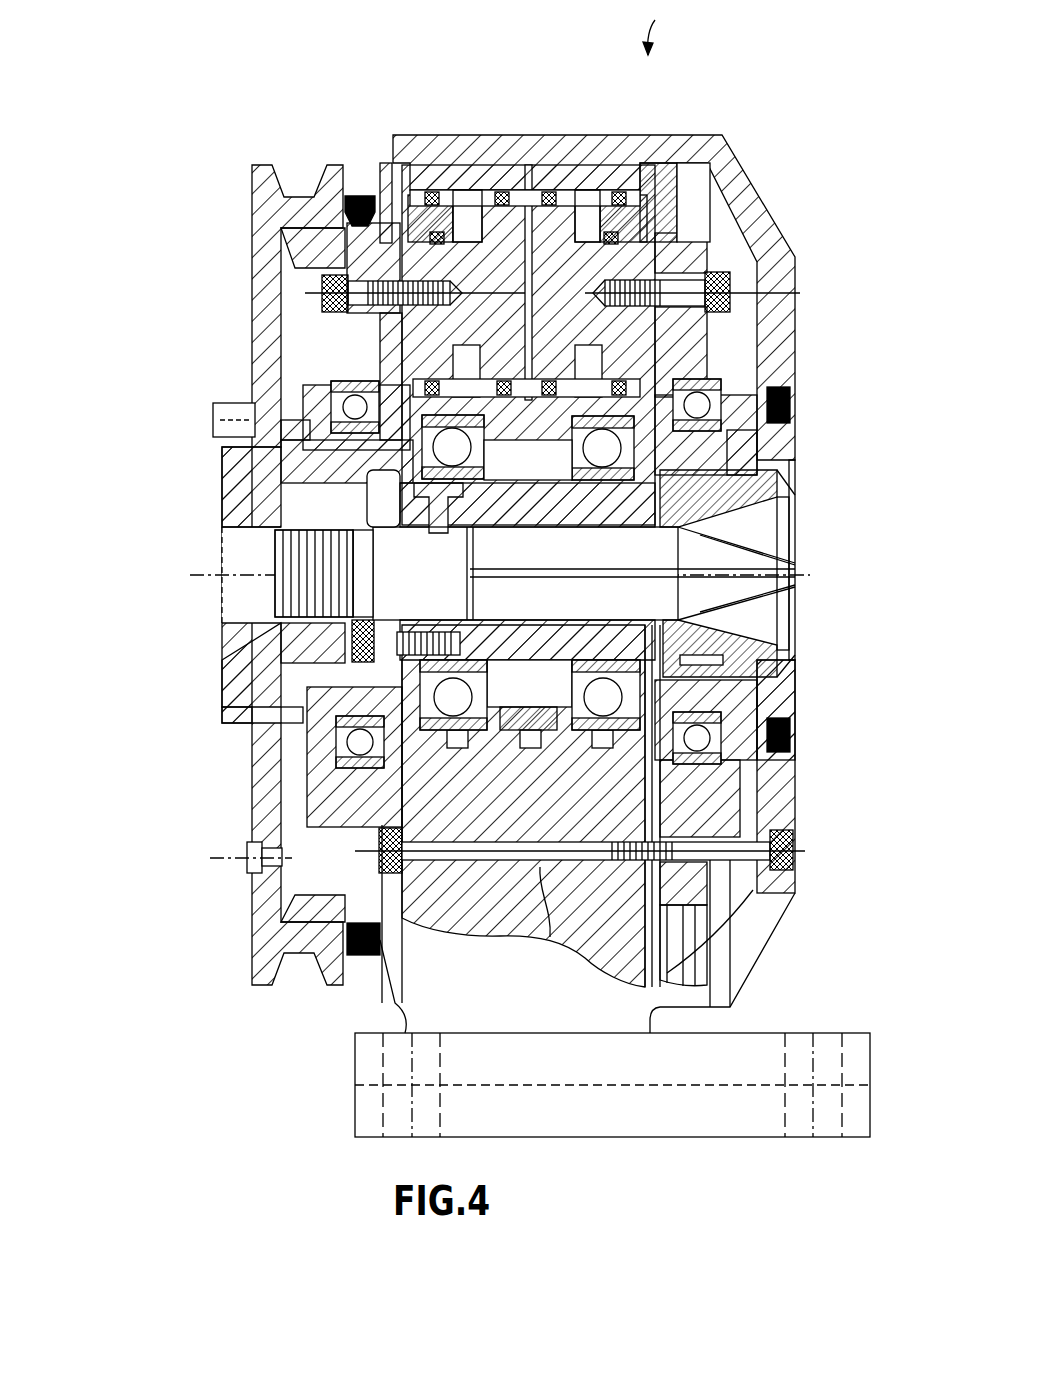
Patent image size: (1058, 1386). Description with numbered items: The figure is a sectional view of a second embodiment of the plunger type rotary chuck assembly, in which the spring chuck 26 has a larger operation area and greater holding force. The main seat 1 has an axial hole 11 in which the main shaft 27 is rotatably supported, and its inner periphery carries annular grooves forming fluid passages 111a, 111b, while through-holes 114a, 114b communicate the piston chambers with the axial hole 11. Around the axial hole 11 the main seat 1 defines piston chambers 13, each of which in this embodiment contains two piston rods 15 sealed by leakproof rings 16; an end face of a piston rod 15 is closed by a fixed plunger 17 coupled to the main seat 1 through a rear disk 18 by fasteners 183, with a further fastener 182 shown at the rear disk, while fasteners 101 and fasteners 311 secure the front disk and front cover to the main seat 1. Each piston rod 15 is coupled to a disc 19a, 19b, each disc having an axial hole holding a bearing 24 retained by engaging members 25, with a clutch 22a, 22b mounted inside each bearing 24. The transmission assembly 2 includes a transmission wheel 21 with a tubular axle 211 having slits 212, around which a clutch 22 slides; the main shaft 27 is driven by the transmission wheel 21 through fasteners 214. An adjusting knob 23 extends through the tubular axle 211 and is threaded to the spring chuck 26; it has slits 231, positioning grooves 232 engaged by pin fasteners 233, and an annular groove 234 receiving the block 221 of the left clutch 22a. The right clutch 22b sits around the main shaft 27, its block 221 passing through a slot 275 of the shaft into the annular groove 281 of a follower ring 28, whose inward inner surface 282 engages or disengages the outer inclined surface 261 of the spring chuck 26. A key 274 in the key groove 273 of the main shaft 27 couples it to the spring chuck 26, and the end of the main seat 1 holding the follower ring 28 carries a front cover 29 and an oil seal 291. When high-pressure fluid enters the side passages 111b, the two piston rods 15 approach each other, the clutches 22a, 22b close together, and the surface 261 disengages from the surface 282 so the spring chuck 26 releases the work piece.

The main seat 1 is at (663, 13).
The transmission assembly 2 is at (205, 322).
The axial hole 11 is at (700, 630).
The piston chamber 13 is at (447, 195).
The piston rod 15 is at (520, 232).
The leakproof ring 16 is at (500, 225).
The fixed plunger 17 is at (372, 165).
The rear disk 18 is at (380, 160).
The disc 19a is at (310, 250).
The disc 19b is at (688, 257).
The transmission wheel 21 is at (251, 185).
The clutch 22 is at (305, 740).
The left clutch 22a is at (305, 400).
The right clutch 22b is at (760, 455).
The adjusting knob 23 is at (280, 680).
The bearing 24 is at (315, 390).
The engaging member 25 is at (365, 485).
The spring chuck 26 is at (795, 610).
The main shaft 27 is at (780, 712).
The follower ring 28 is at (859, 573).
The front cover 29 is at (740, 165).
The fasteners 101 is at (690, 292).
The annular groove (fluid passage) 111a is at (550, 937).
The annular groove (side passage) 111b is at (700, 790).
The tapered bore 114a is at (770, 603).
The center bore 114b is at (700, 573).
The nut 182 is at (335, 870).
The fasteners 183 is at (310, 285).
The tubular axle 211 is at (285, 725).
The slits 212 is at (222, 470).
The fasteners 214 is at (285, 580).
The block 221 is at (720, 495).
The slits 231 is at (300, 617).
The positioning grooves 232 is at (245, 712).
The fasteners 233 is at (215, 420).
The annular groove 234 is at (390, 478).
The inclined surface 261 is at (770, 672).
The key groove 273 is at (300, 533).
The key 274 is at (314, 573).
The slot 275 is at (720, 472).
The annular groove 281 is at (720, 648).
The inward inner surface 282 is at (583, 527).
The oil seal 291 is at (780, 412).
The fasteners 311 is at (795, 858).